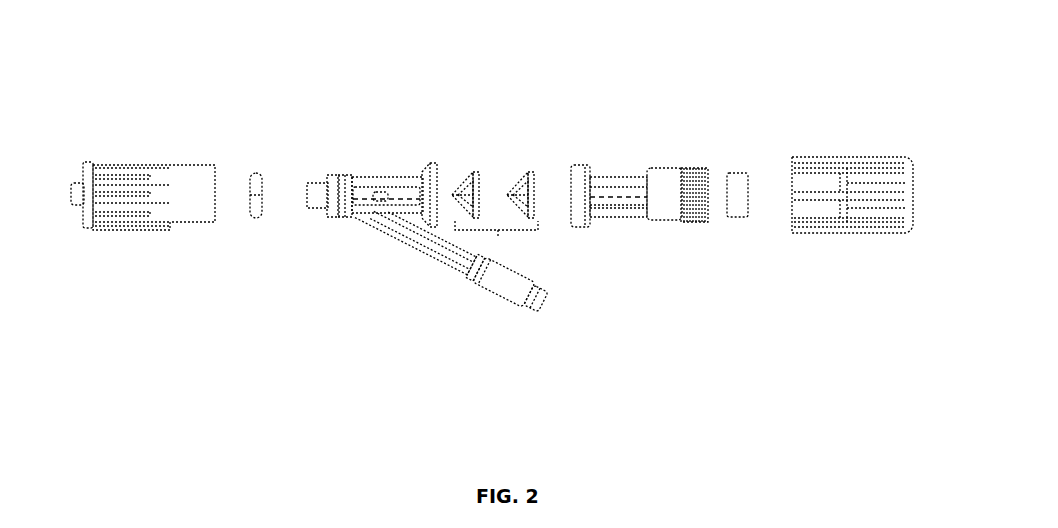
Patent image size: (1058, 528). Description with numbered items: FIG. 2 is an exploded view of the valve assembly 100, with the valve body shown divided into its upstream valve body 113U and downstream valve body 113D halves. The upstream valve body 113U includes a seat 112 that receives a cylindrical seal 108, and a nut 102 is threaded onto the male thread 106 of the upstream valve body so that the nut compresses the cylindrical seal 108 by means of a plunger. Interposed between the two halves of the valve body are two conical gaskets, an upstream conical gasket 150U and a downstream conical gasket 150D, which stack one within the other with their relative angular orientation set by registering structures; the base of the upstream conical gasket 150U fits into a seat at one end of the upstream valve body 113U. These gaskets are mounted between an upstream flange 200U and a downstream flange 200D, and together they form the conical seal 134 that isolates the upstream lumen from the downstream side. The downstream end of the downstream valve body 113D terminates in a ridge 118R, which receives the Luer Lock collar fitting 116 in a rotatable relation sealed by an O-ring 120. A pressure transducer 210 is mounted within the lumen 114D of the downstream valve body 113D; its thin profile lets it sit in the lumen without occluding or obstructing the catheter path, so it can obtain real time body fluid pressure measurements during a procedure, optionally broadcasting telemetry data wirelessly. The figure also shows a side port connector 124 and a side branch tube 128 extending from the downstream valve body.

The medical connector assembly 100 is at (190, 85).
The nut 102 is at (863, 162).
The male thread 106 is at (690, 222).
The cylindrical seal 108 is at (742, 208).
The seat 112 is at (660, 180).
The upstream valve body 113U is at (623, 178).
The downstream valve body 113D is at (380, 180).
The lumen of the downstream valve body 114D is at (403, 188).
The Luer Lock collar fitting 116 is at (190, 222).
The ridge 118R is at (340, 212).
The O-ring 120 is at (253, 220).
The side port connector 124 is at (518, 287).
The side branch tube 128 is at (437, 260).
The conical seal 134 is at (498, 236).
The downstream conical gasket 150D is at (463, 172).
The upstream conical gasket 150U is at (523, 172).
The downstream flange 200D is at (432, 178).
The upstream flange 200U is at (580, 215).
The pressure transducer 210 is at (380, 190).